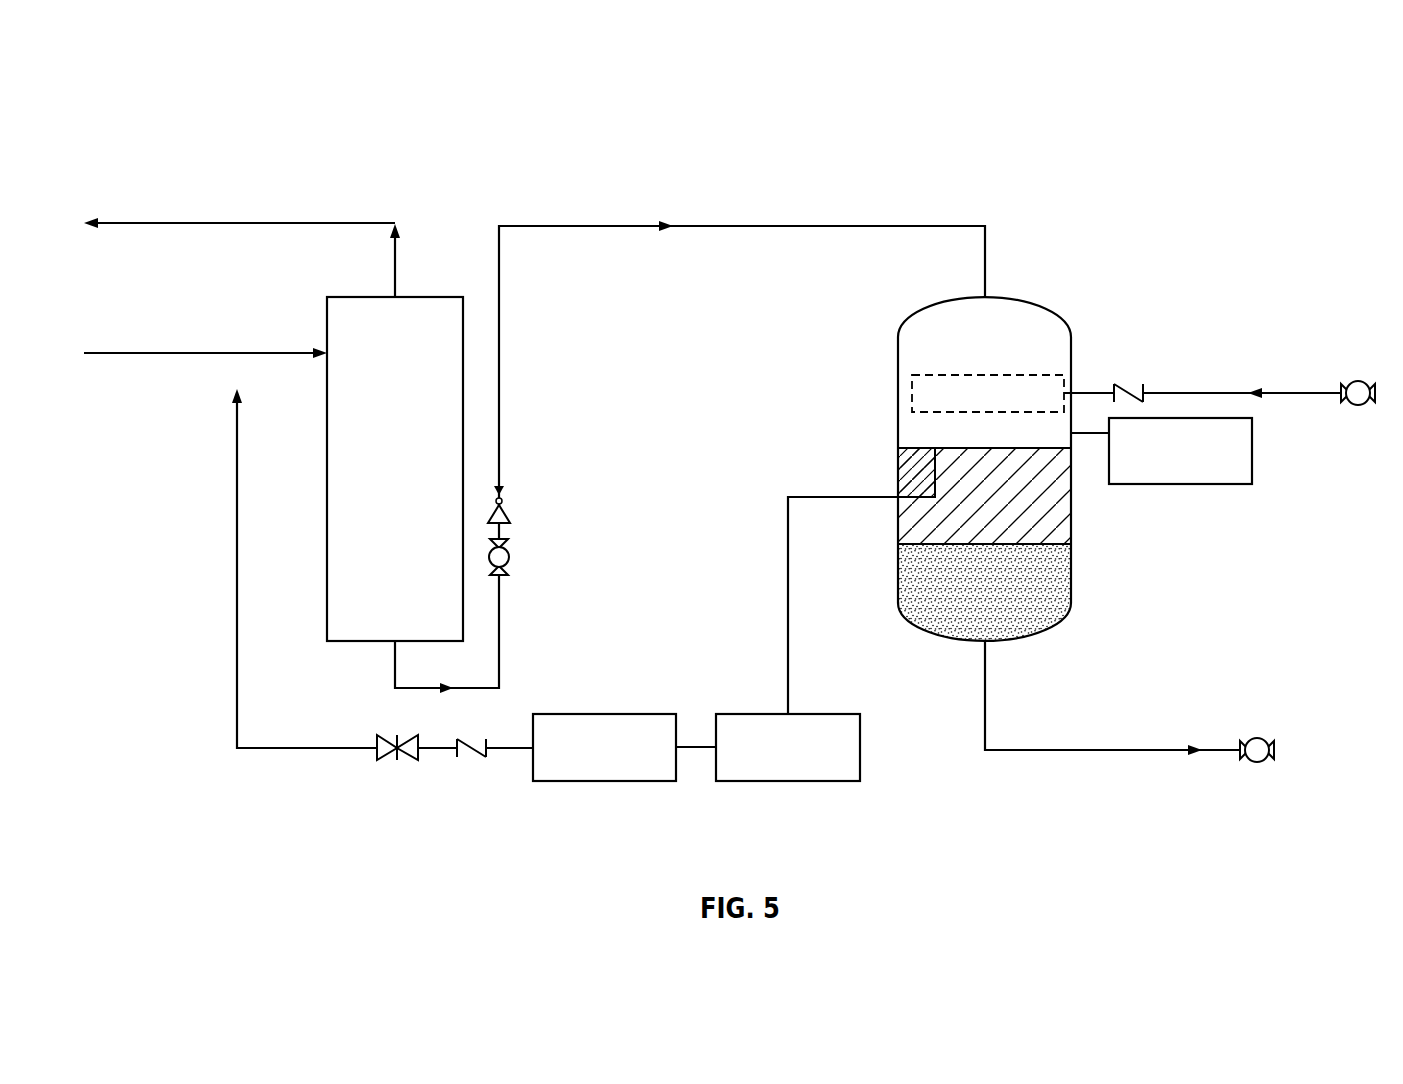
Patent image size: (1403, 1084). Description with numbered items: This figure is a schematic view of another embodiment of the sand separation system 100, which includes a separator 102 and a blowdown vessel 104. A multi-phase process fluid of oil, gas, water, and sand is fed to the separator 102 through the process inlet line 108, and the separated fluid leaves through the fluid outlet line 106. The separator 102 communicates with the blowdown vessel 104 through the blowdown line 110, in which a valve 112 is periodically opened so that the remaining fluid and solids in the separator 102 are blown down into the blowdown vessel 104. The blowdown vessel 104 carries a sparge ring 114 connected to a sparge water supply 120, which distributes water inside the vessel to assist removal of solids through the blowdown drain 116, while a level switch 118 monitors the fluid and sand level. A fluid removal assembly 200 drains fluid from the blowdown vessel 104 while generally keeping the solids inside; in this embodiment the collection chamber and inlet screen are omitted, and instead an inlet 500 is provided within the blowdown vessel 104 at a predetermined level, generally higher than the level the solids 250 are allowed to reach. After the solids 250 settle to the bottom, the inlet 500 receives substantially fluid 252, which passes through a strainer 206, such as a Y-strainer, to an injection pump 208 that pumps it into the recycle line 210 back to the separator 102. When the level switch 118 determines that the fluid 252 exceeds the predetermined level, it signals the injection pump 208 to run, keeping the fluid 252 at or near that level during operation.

The sand separation system 100 is at (140, 108).
The separator 102 is at (418, 296).
The blowdown vessel 104 is at (1027, 299).
The fluid outlet line 106 is at (312, 223).
The process inlet line 108 is at (163, 357).
The blowdown line 110 is at (587, 225).
The valve 112 is at (510, 556).
The sparge ring 114 is at (1015, 413).
The blowdown drain 116 is at (1057, 750).
The level switch 118 is at (1187, 486).
The sparge water supply 120 is at (1358, 407).
The fluid removal assembly 200 is at (750, 829).
The strainer 206 is at (797, 783).
The injection pump 208 is at (603, 783).
The recycle line 210 is at (310, 752).
The solids 250 is at (1075, 597).
The fluid 252 is at (1055, 527).
The inlet 500 is at (915, 447).